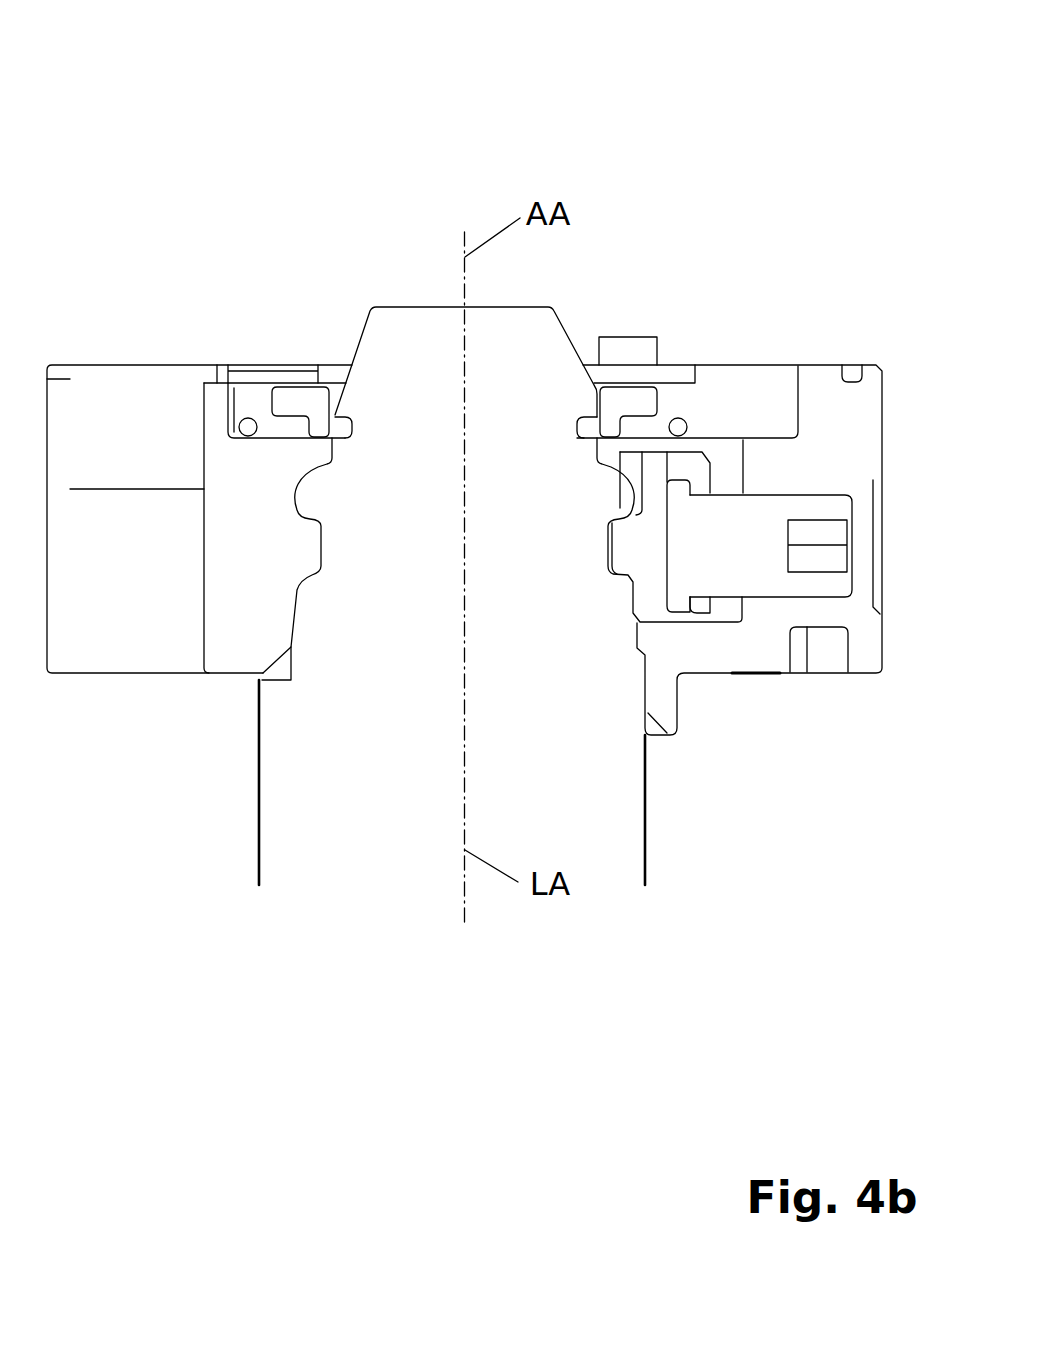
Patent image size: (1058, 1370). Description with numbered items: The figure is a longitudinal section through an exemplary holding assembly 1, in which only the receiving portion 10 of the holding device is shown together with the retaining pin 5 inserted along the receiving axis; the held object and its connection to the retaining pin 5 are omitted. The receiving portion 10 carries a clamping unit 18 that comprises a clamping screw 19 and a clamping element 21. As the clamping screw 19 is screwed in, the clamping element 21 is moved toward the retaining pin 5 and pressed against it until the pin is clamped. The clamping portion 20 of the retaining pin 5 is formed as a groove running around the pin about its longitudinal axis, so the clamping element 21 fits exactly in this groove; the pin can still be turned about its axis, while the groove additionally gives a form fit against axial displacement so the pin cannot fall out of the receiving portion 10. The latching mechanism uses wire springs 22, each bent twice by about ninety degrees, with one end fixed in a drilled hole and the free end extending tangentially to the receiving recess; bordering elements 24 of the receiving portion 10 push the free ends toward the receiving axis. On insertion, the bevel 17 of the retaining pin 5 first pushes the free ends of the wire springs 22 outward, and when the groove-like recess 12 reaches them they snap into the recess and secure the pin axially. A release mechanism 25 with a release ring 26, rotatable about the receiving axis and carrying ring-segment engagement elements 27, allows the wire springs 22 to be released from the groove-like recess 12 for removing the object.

The holding assembly 1 is at (163, 145).
The retaining pin 5 is at (555, 784).
The receiving portion 10 is at (827, 362).
The groove-like recess 12 is at (362, 418).
The bevel 17 is at (356, 347).
The clamping unit 18 is at (787, 493).
The clamping screw 19 is at (748, 558).
The clamping portion 20 is at (607, 540).
The clamping element 21 is at (643, 542).
The wire spring 22 is at (681, 423).
The bordering element 24 is at (216, 412).
The release mechanism 25 is at (642, 385).
The release ring 26 is at (613, 398).
The engagement element 27 is at (317, 430).